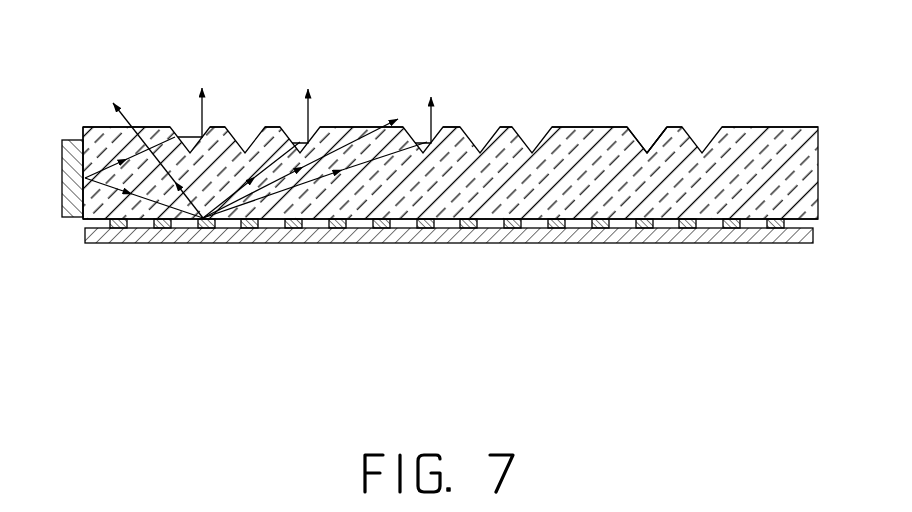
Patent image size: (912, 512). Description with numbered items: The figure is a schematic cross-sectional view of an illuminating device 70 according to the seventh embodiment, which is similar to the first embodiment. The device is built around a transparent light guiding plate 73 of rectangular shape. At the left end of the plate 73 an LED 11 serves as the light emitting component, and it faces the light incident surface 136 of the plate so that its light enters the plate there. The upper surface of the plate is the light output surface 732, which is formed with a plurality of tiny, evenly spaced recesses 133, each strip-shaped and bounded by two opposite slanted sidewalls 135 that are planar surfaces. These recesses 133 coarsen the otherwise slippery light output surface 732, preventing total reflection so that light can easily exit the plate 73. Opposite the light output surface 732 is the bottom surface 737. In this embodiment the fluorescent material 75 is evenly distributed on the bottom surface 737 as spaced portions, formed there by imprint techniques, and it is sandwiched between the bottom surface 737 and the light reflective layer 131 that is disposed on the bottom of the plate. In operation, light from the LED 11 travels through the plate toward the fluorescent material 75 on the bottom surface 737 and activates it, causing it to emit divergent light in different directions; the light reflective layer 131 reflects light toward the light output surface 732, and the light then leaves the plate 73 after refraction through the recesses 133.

The illuminating device 70 is at (363, 67).
The plate 73 is at (818, 168).
The light output surface 732 is at (767, 127).
The bottom surface 737 is at (85, 219).
The light incident surface 136 is at (83, 129).
The recesses 133 is at (633, 127).
The slanted sidewalls 135 is at (655, 127).
The LED 11 is at (68, 167).
The fluorescent material 75 is at (783, 222).
The light reflective layer 131 is at (798, 236).